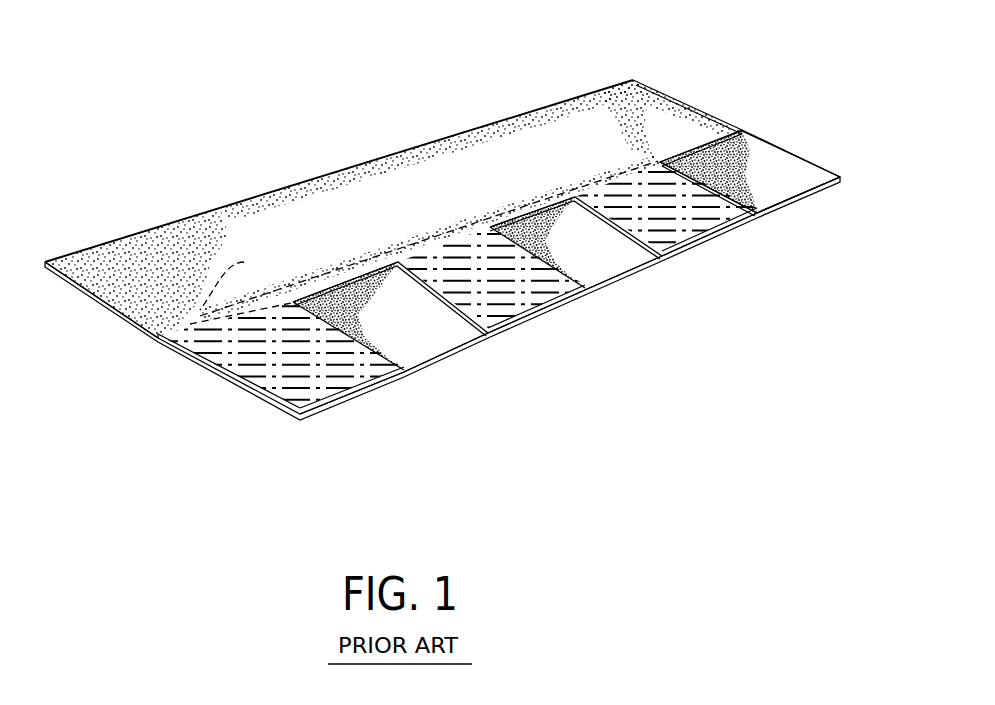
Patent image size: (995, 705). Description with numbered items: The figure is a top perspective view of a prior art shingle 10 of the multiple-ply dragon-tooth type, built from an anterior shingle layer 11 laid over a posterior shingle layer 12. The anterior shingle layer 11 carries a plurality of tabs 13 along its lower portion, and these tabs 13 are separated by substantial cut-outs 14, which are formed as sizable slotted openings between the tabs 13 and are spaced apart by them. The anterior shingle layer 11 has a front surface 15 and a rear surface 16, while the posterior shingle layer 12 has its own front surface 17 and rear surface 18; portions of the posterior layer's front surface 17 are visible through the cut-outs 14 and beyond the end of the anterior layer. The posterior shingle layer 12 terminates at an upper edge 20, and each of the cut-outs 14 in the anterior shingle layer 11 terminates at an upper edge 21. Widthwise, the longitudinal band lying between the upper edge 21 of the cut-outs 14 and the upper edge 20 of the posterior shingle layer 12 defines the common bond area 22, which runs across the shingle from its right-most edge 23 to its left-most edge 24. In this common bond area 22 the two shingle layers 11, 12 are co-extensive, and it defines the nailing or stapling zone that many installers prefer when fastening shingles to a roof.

The shingle 10 is at (675, 108).
The anterior shingle layer 11 is at (640, 122).
The posterior shingle layer 12 is at (800, 172).
The tabs 13 is at (688, 220).
The cut-outs 14 is at (768, 188).
The front surface 15 is at (238, 230).
The rear surface 16 is at (122, 315).
The front surface 17 is at (758, 156).
The rear surface 18 is at (303, 422).
The upper edge 20 is at (244, 262).
The upper edge 21 is at (392, 262).
The common bond area 22 is at (320, 263).
The right-most edge 23 is at (718, 120).
The left-most edge 24 is at (214, 373).